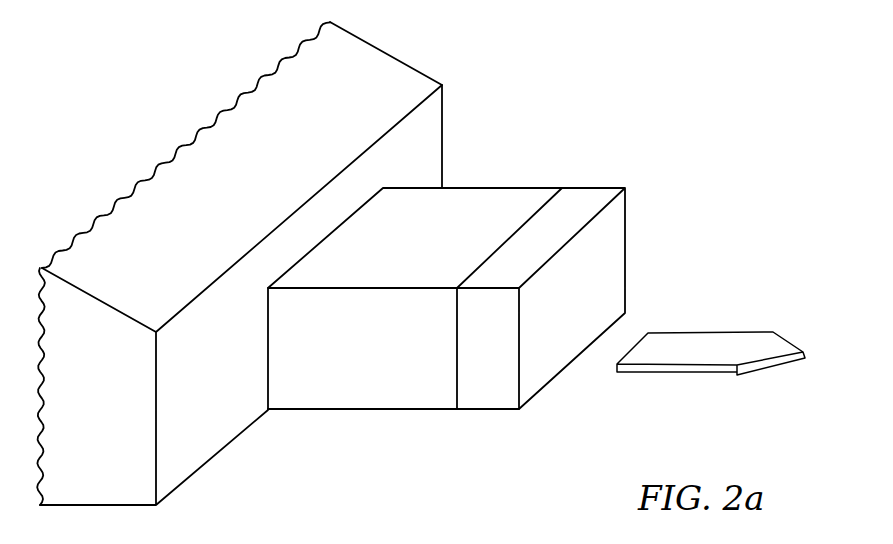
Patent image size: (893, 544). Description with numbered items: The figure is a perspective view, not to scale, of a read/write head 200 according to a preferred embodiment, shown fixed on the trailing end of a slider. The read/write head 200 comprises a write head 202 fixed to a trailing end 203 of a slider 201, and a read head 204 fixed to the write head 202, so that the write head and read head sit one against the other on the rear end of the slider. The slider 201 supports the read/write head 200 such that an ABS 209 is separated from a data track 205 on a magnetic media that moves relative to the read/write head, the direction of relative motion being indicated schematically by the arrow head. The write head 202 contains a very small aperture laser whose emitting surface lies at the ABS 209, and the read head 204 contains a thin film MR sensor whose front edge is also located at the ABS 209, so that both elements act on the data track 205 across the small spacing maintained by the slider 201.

The read/write head 200 is at (520, 443).
The slider 201 is at (385, 60).
The write head 202 is at (515, 193).
The trailing end 203 is at (437, 126).
The read head 204 is at (590, 193).
The data track 205 is at (708, 342).
The ABS 209 is at (313, 413).